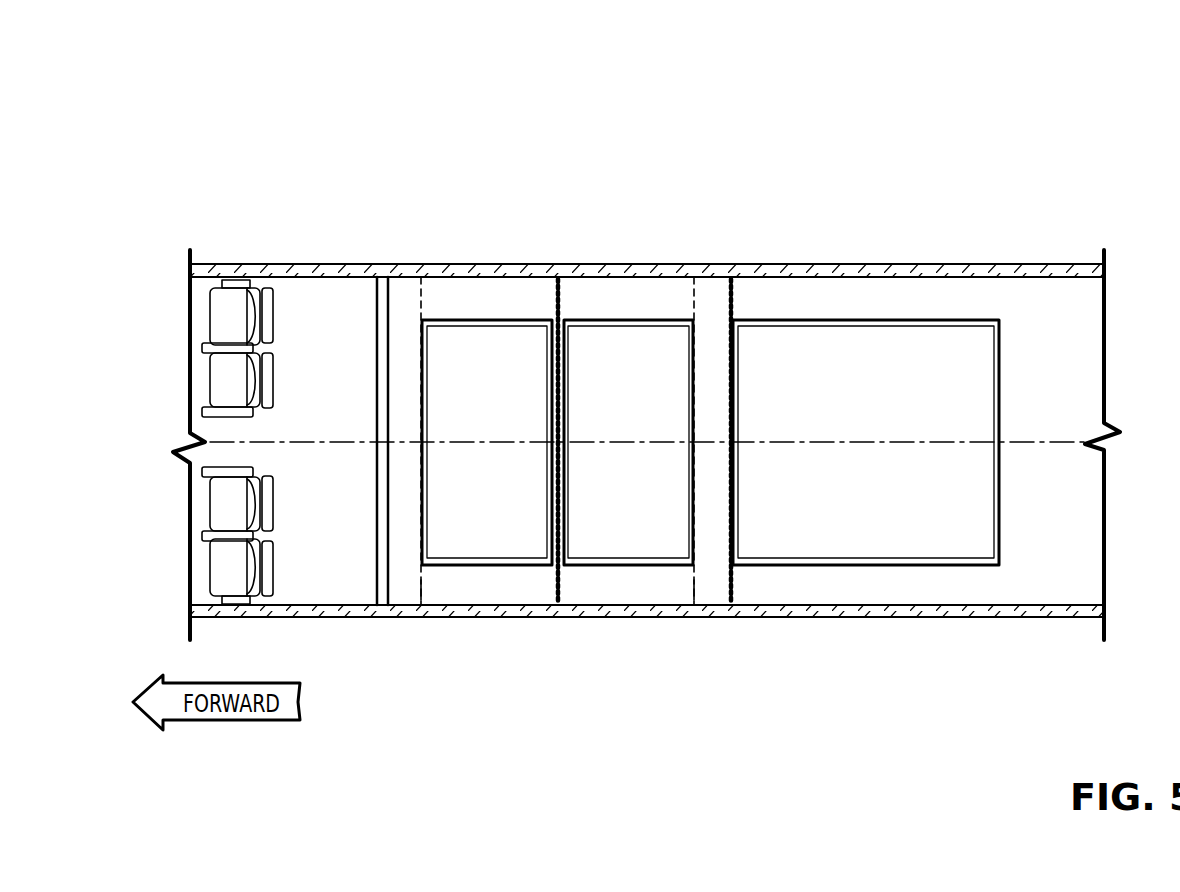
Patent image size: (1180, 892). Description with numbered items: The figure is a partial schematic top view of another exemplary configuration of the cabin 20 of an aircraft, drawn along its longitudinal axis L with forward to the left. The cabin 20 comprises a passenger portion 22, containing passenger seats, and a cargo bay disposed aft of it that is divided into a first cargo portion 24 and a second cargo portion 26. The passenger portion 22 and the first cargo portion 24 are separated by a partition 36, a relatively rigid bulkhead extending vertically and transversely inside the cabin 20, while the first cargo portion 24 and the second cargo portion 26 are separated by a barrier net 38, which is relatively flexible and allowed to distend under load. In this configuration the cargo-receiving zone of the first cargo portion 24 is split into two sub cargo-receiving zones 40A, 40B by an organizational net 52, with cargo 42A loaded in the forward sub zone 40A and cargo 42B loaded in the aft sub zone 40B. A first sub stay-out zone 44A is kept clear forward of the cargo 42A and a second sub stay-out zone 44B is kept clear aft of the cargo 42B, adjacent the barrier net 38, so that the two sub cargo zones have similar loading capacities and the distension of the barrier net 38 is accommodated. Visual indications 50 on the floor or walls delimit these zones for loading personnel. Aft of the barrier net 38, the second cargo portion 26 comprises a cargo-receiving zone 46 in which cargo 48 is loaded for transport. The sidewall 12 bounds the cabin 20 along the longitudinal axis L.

The cabin 20 is at (282, 108).
The fuselage sidewall 12 is at (305, 263).
The partition 36 is at (383, 297).
The organizational net 52 is at (558, 293).
The first cargo portion 24 is at (648, 238).
The barrier net 38 is at (735, 295).
The second cargo portion 26 is at (870, 238).
The passenger portion 22 is at (273, 442).
The cargo 42A is at (487, 442).
The cargo 42B is at (628, 442).
The cargo 48 is at (866, 442).
The sub stay-out zone 44A is at (402, 578).
The sub stay-out zone 44B is at (710, 592).
The visual indication 50 is at (423, 585).
The sub cargo-receiving zone 40A is at (463, 587).
The sub cargo-receiving zone 40B is at (588, 587).
The cargo-receiving zone 46 is at (860, 592).
The longitudinal axis L is at (1077, 443).